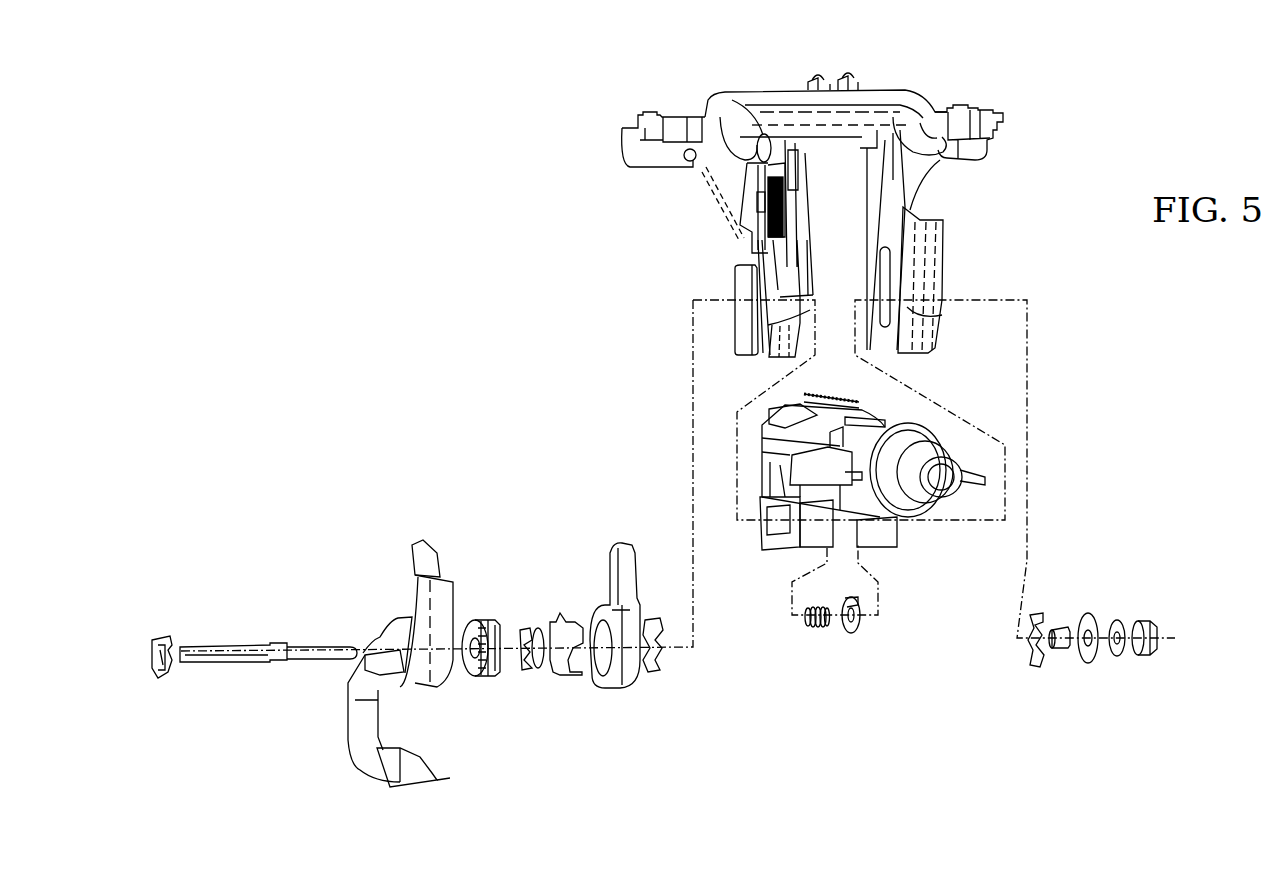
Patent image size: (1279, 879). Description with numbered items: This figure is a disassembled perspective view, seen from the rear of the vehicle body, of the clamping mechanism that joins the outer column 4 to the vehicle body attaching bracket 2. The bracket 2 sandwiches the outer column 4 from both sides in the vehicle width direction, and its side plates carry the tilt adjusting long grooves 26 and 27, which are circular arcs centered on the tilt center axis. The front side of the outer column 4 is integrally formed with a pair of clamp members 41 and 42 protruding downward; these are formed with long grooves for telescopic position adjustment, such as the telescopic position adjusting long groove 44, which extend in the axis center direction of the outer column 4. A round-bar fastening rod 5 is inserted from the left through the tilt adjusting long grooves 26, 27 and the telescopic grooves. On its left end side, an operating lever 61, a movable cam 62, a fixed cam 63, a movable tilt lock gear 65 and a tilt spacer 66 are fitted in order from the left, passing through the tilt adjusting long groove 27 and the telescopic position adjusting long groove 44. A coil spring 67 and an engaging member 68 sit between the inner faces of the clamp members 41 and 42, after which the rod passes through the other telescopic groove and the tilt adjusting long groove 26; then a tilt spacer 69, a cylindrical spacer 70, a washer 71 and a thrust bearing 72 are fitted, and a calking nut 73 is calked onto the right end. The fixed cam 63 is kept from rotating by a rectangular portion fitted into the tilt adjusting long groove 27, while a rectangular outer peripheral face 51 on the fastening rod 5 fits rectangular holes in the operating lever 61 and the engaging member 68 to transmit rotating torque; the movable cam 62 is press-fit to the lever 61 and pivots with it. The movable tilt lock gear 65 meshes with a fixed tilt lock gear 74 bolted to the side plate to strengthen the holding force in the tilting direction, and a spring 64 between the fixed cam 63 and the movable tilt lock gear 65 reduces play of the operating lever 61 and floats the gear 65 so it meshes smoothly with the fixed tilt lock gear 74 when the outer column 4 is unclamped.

The vehicle body attaching bracket 2 is at (812, 211).
The outer column 4 is at (830, 427).
The fastening rod 5 is at (211, 635).
The tilt adjusting long groove 26 is at (885, 277).
The tilt adjusting long groove 27 is at (773, 282).
The clamp member 41 is at (880, 543).
The clamp member 42 is at (802, 547).
The telescopic position adjusting long groove 44 is at (760, 513).
The rectangular outer peripheral face 51 is at (252, 647).
The operating lever 61 is at (421, 547).
The movable cam 62 is at (485, 622).
The fixed cam 63 is at (533, 623).
The spring 64 is at (568, 619).
The movable tilt lock gear 65 is at (625, 553).
The tilt spacer 66 is at (650, 670).
The spring 67 is at (817, 627).
The engaging member 68 is at (853, 632).
The tilt spacer 69 is at (1036, 667).
The cylindrical spacer 70 is at (1058, 628).
The washer 71 is at (1090, 663).
The thrust bearing 72 is at (1118, 623).
The calking nut 73 is at (1150, 655).
The fixed tilt lock gear 74 is at (750, 207).